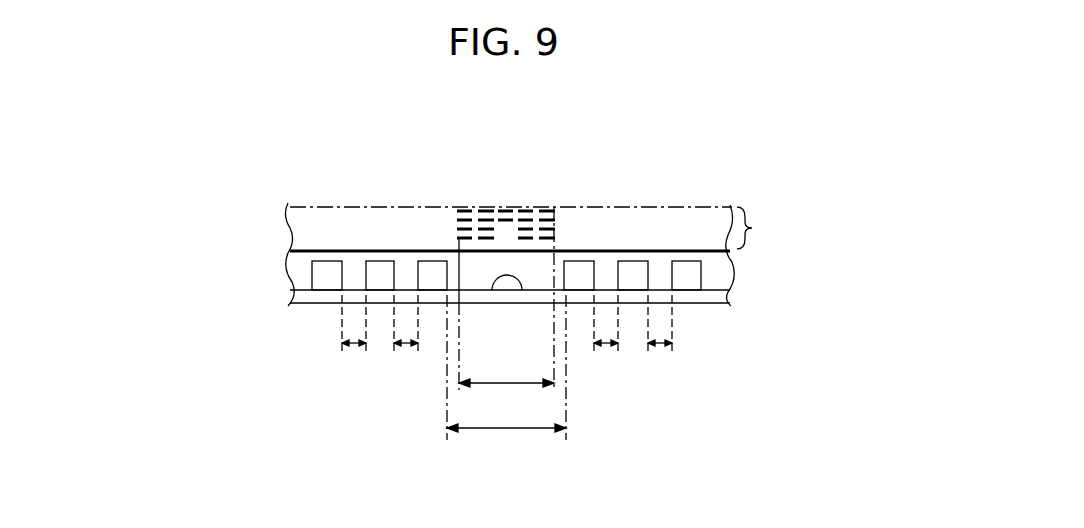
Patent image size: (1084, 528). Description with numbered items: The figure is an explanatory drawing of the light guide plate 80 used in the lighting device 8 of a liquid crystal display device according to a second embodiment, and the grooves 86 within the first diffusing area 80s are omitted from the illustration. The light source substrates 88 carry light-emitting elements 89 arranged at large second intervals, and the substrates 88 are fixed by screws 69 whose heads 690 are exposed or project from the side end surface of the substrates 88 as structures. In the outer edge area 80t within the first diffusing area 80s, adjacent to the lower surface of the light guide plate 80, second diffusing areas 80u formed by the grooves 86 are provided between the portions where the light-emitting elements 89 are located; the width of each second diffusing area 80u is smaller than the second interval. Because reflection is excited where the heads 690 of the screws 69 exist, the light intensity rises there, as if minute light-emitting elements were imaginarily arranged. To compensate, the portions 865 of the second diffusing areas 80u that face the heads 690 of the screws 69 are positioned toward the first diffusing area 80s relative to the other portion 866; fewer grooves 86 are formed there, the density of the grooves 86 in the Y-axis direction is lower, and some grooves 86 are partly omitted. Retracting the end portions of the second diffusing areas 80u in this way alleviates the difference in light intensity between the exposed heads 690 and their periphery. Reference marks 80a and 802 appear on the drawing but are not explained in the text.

The lighting device 8 is at (397, 96).
The light guide plate 80 is at (712, 259).
The upper surface of substrate 80a is at (302, 267).
The upper substrate layer 802 is at (445, 282).
The first diffusing area 80s is at (641, 186).
The outer edge area 80t is at (766, 228).
The second diffusing areas 80u is at (457, 225).
The grooves 86 is at (483, 220).
The portions facing the screw heads 865 is at (505, 233).
The other portion 866 is at (458, 245).
The light source substrates 88 is at (712, 295).
The light-emitting elements 89 is at (380, 273).
The screws 69 is at (503, 312).
The heads of the screws 690 is at (507, 292).